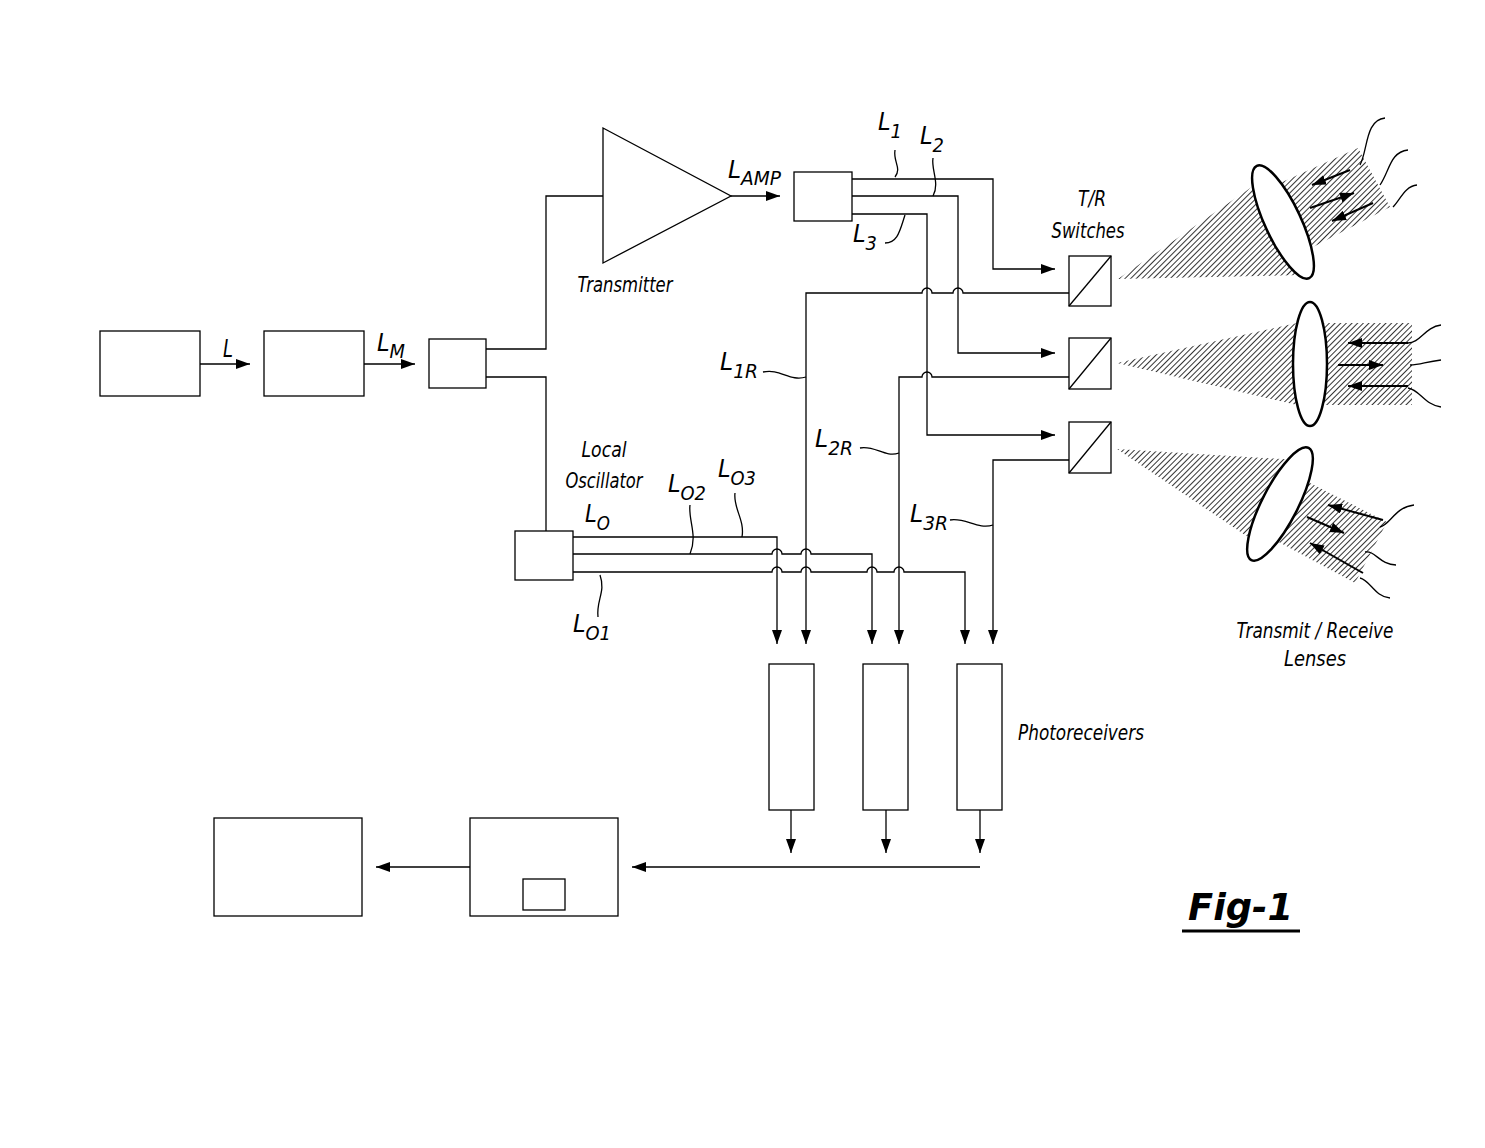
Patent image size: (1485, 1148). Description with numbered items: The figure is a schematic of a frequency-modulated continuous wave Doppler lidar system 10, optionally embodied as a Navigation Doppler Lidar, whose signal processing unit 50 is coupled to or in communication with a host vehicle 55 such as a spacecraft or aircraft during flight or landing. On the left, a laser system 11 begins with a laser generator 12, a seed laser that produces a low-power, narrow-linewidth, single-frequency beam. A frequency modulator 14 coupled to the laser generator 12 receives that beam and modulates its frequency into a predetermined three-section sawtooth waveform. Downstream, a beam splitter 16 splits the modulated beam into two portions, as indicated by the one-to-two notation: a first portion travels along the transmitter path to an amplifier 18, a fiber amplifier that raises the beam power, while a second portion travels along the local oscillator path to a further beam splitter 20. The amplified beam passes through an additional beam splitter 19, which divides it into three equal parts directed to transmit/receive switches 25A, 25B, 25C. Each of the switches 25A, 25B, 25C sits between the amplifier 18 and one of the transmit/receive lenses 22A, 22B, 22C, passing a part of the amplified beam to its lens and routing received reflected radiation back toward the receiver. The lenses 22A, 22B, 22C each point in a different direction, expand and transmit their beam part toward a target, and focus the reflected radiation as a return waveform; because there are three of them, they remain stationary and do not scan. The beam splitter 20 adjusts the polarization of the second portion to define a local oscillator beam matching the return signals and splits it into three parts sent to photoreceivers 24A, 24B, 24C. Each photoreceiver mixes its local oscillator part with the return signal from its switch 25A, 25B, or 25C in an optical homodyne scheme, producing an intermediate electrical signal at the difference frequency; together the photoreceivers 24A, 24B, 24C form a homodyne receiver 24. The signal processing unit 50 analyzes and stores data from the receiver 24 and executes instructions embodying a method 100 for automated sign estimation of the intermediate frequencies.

The Doppler lidar system 10 is at (1218, 116).
The laser system 11 is at (253, 180).
The laser generator 12 is at (152, 331).
The frequency modulator 14 is at (312, 331).
The beam splitter 16 is at (455, 339).
The amplifier 18 is at (603, 153).
The beam splitter 19 is at (823, 172).
The beam splitter 20 is at (515, 556).
The transmit/receive lens 22A is at (1262, 166).
The transmit/receive lens 22B is at (1323, 320).
The transmit/receive lens 22C is at (1315, 455).
The homodyne receiver 24 is at (727, 632).
The photoreceiver 24A is at (808, 748).
The photoreceiver 24B is at (870, 748).
The photoreceiver 24C is at (964, 748).
The T/R switch 25A is at (1111, 296).
The T/R switch 25B is at (1111, 380).
The T/R switch 25C is at (1090, 473).
The signal processing unit 50 is at (470, 843).
The host vehicle 55 is at (214, 866).
The method 100 is at (544, 894).